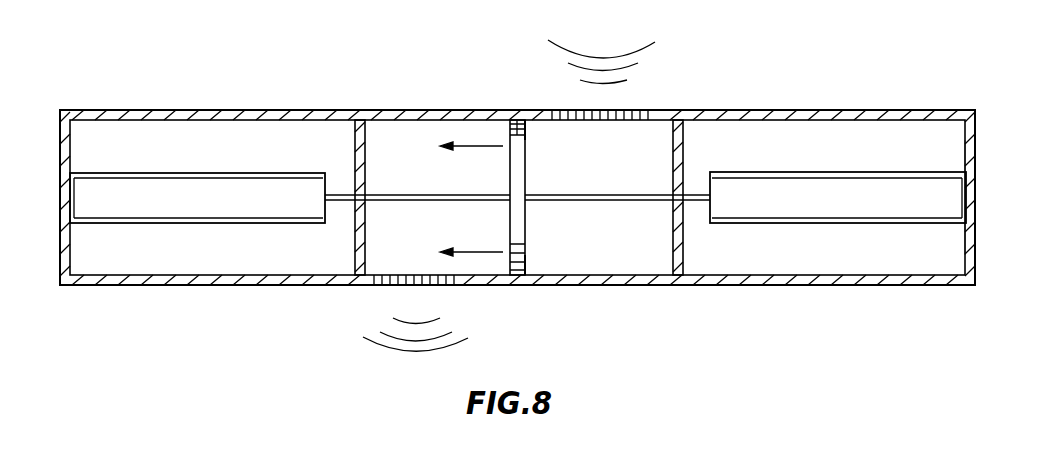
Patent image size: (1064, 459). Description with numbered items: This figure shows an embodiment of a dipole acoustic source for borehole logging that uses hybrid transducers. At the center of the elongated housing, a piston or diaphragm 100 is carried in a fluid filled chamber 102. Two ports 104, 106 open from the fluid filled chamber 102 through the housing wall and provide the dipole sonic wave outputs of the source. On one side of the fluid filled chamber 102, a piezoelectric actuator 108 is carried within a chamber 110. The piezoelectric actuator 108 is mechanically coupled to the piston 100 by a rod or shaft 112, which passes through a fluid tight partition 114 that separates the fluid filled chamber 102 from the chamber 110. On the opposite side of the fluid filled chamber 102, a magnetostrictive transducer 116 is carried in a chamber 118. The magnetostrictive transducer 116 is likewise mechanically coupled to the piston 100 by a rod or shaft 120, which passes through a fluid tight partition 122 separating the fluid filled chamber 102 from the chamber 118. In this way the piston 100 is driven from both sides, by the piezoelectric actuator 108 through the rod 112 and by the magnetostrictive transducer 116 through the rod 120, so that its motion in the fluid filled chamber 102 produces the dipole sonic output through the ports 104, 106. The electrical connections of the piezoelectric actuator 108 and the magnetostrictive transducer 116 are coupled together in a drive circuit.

The piston 100 is at (517, 122).
The fluid filled chamber 102 is at (430, 130).
The port 104 is at (375, 283).
The port 106 is at (645, 113).
The piezoelectric actuator 108 is at (197, 198).
The chamber 110 is at (178, 263).
The rod 112 is at (448, 202).
The fluid tight partition 114 is at (355, 137).
The magnetostrictive transducer 116 is at (838, 197).
The chamber 118 is at (925, 133).
The rod 120 is at (527, 173).
The fluid tight partition 122 is at (685, 145).